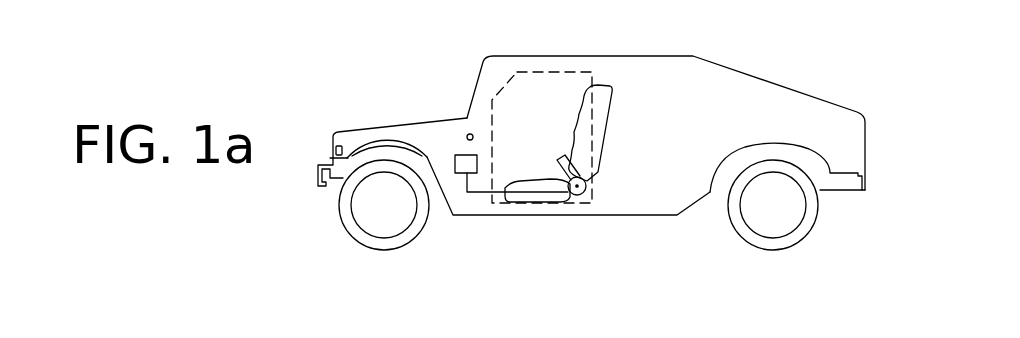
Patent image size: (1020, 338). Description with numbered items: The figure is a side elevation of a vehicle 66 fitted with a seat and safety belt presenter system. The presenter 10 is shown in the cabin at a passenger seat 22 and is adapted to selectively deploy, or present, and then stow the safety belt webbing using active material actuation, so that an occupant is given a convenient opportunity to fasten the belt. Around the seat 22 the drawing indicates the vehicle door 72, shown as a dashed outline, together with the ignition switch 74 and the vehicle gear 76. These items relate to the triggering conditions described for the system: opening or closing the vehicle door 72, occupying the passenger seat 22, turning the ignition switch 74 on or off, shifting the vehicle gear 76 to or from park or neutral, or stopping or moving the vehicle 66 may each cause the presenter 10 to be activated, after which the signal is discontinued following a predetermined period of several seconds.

The presenter 10 is at (586, 139).
The passenger seat 22 is at (590, 87).
The vehicle 66 is at (755, 90).
The vehicle door 72 is at (555, 71).
The ignition switch 74 is at (469, 134).
The vehicle gear 76 is at (467, 155).